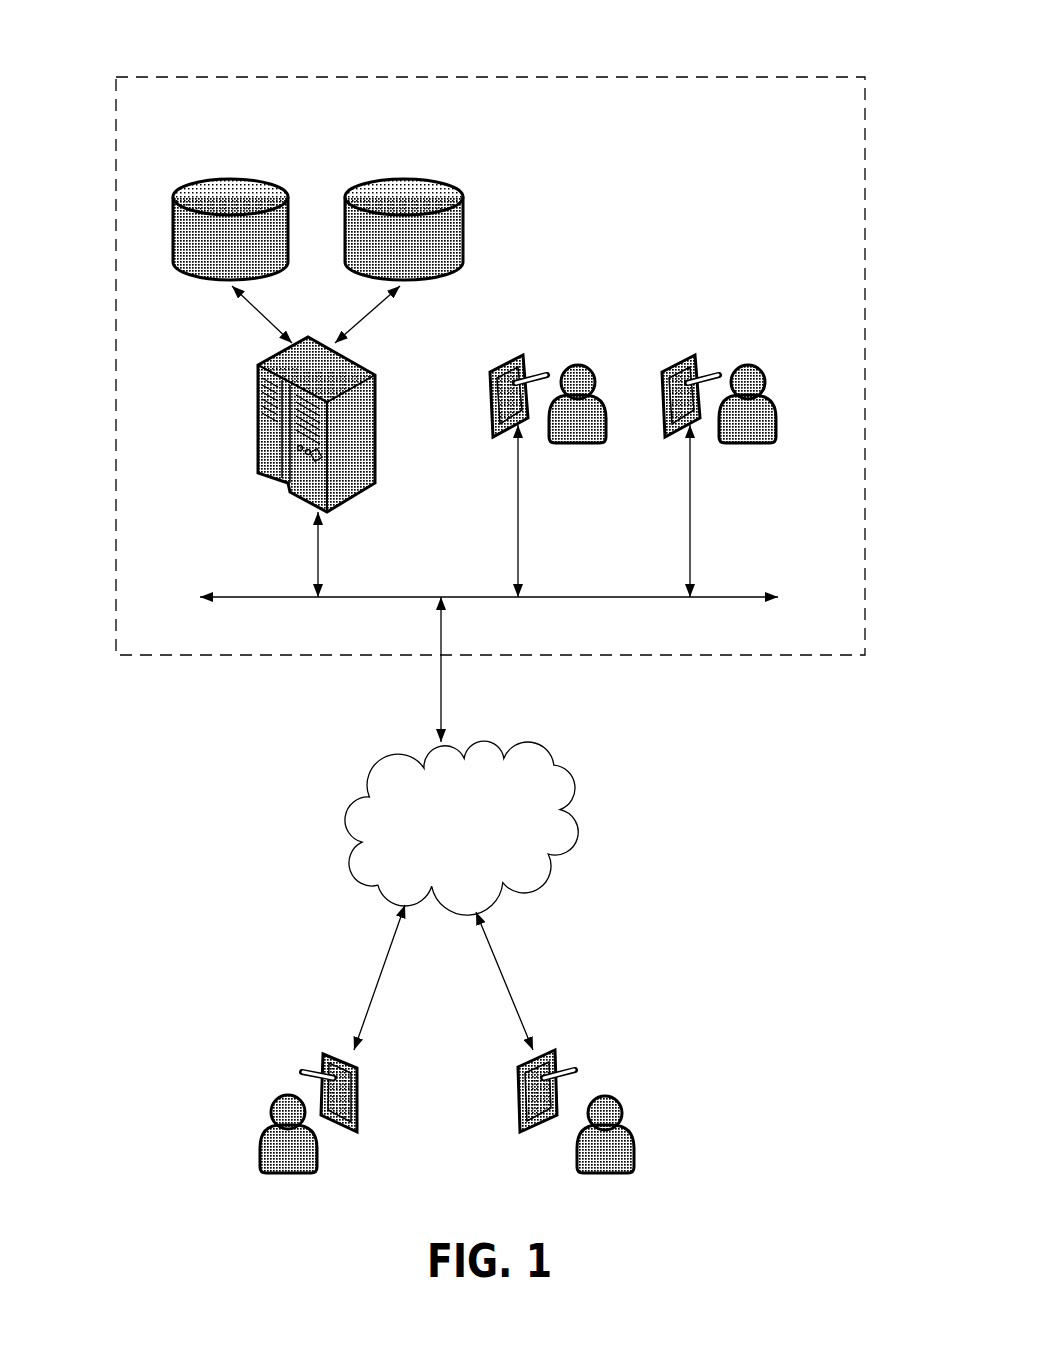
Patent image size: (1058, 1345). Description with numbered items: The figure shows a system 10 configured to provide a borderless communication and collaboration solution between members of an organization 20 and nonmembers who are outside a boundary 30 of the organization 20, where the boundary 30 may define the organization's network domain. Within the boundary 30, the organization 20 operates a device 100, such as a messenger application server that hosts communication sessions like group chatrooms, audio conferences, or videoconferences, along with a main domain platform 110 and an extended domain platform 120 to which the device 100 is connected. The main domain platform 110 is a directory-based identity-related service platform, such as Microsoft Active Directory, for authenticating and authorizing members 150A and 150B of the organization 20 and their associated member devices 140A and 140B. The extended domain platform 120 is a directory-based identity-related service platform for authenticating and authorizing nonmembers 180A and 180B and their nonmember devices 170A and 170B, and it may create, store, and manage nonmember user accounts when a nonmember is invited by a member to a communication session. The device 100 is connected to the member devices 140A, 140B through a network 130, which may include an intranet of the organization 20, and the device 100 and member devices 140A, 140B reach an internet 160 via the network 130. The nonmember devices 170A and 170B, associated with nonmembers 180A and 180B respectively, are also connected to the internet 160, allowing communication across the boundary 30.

The system 10 is at (72, 30).
The organization 20 is at (807, 145).
The boundary 30 is at (640, 77).
The device 100 is at (258, 420).
The main domain platform 110 is at (245, 165).
The extended domain platform 120 is at (405, 165).
The network 130 is at (272, 597).
The member device 140A is at (523, 355).
The member device 140B is at (698, 355).
The member 150A is at (580, 365).
The member 150B is at (776, 396).
The internet 160 is at (347, 825).
The nonmember device 170A is at (323, 1054).
The nonmember device 170B is at (557, 1048).
The nonmember 180A is at (262, 1132).
The nonmember 180B is at (636, 1136).